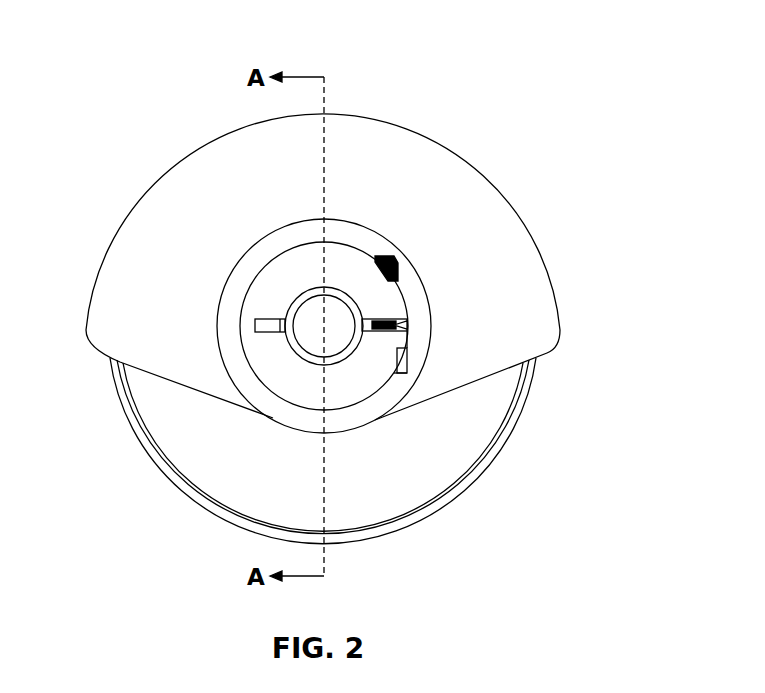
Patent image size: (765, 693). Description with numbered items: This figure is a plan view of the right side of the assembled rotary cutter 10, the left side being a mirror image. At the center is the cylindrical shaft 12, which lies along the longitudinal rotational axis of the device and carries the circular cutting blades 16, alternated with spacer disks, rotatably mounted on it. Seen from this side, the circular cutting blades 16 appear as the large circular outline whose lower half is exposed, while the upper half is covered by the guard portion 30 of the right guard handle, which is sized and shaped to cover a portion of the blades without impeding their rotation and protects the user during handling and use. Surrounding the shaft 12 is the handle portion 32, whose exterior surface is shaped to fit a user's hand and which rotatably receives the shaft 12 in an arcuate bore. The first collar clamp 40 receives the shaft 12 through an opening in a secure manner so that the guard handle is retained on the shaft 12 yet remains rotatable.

The rotary cutter 10 is at (627, 163).
The cylindrical shaft 12 is at (334, 287).
The circular cutting blades 16 is at (477, 480).
The guard portion 30 is at (168, 146).
The handle portion 32 is at (218, 297).
The first collar clamp 40 is at (367, 255).